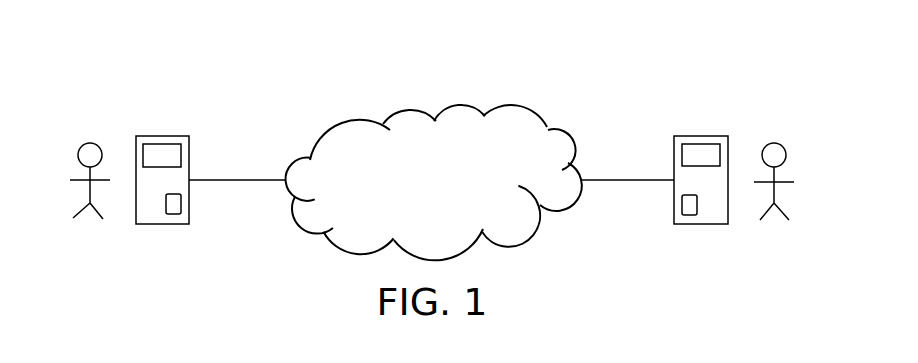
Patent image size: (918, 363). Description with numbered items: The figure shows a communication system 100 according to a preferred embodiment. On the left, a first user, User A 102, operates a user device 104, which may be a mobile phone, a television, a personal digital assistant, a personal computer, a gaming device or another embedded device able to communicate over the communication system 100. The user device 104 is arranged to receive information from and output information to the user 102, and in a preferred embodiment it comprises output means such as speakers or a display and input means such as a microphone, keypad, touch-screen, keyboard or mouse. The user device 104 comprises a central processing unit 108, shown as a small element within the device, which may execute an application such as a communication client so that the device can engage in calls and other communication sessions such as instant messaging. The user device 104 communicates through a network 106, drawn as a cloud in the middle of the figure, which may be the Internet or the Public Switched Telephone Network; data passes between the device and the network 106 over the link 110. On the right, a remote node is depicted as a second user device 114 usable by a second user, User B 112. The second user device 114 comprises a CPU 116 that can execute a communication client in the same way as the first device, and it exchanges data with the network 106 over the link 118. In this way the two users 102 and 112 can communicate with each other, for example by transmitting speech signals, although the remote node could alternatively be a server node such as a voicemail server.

The communication system 100 is at (320, 103).
The user A 102 is at (90, 143).
The user device 104 is at (163, 135).
The network 106 is at (512, 105).
The central processing unit (CPU) 108 is at (173, 214).
The link 110 is at (237, 181).
The second user 112 is at (775, 143).
The second user device 114 is at (703, 135).
The CPU 116 is at (688, 215).
The link 118 is at (625, 181).